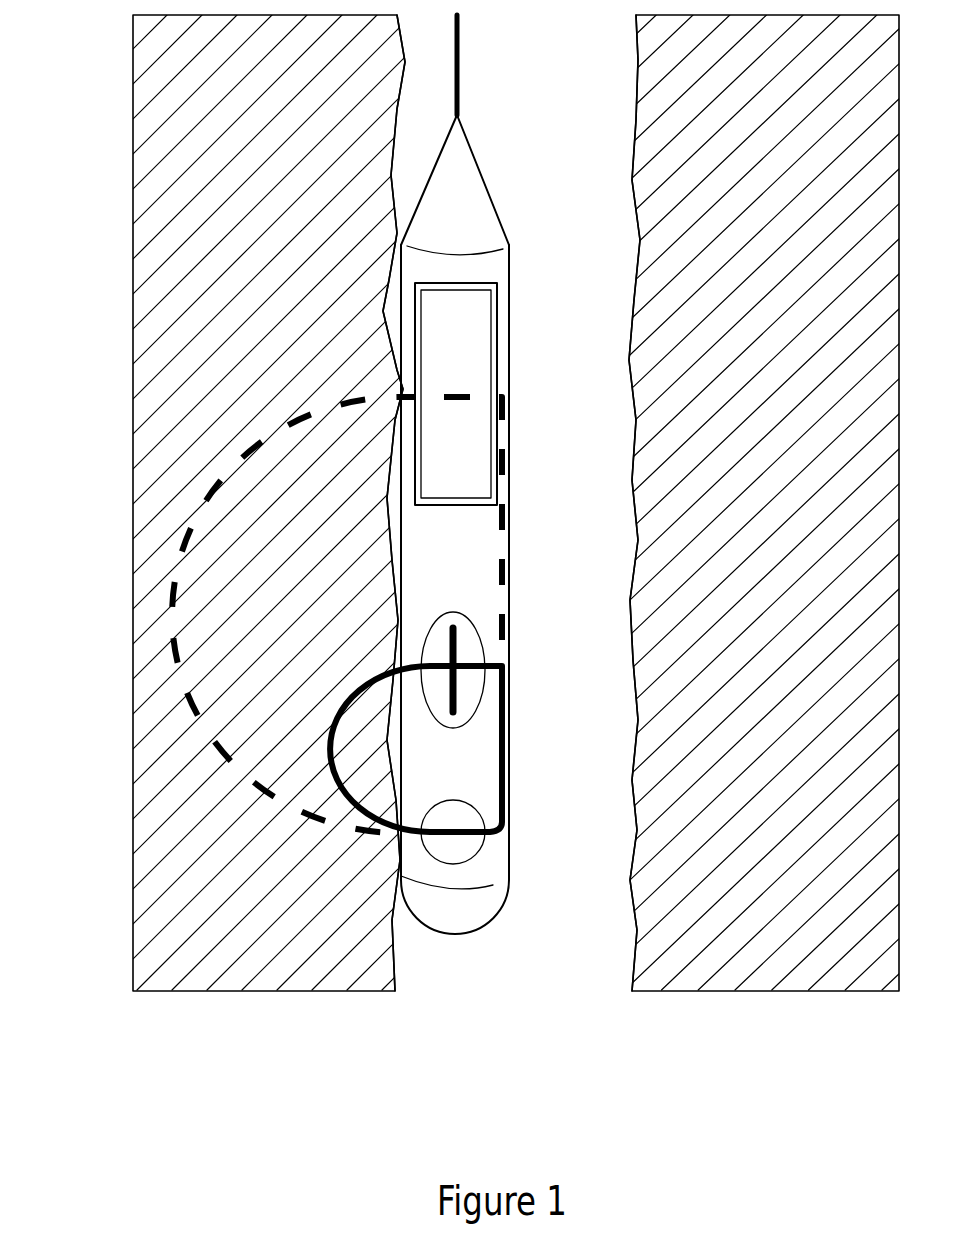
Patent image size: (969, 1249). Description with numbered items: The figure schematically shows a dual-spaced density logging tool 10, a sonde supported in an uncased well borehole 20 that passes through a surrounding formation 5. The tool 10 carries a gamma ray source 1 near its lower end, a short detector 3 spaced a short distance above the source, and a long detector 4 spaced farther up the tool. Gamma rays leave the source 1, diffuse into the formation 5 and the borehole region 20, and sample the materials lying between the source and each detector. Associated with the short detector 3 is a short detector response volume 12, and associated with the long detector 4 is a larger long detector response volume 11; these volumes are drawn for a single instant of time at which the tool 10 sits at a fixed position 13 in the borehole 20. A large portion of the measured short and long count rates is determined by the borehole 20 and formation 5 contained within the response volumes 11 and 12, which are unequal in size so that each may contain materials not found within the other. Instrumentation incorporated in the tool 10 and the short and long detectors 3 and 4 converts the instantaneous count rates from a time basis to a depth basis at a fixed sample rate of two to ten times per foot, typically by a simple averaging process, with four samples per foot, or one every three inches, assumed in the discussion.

The gamma ray source 1 is at (486, 830).
The short detector 3 is at (484, 650).
The long detector 4 is at (498, 320).
The formation 5 is at (170, 963).
The dual-spaced density logging tool 10 is at (483, 165).
The long detector response volume 11 is at (347, 402).
The short detector response volume 12 is at (357, 690).
The fixed position 13 is at (441, 960).
The borehole 20 is at (549, 1008).